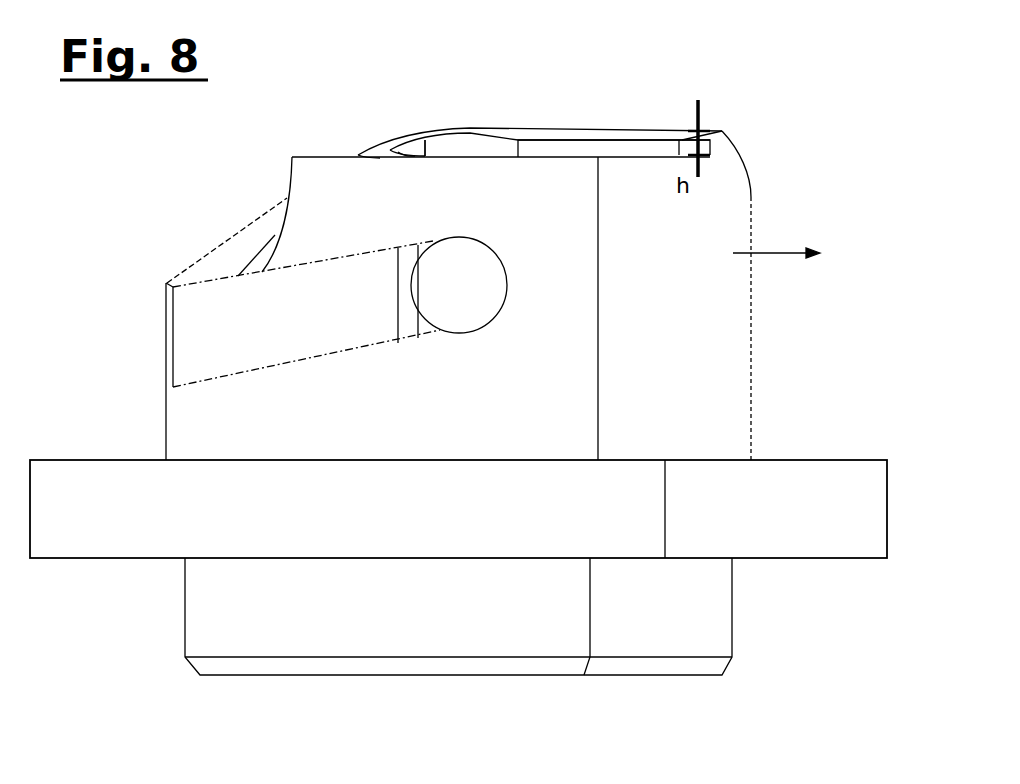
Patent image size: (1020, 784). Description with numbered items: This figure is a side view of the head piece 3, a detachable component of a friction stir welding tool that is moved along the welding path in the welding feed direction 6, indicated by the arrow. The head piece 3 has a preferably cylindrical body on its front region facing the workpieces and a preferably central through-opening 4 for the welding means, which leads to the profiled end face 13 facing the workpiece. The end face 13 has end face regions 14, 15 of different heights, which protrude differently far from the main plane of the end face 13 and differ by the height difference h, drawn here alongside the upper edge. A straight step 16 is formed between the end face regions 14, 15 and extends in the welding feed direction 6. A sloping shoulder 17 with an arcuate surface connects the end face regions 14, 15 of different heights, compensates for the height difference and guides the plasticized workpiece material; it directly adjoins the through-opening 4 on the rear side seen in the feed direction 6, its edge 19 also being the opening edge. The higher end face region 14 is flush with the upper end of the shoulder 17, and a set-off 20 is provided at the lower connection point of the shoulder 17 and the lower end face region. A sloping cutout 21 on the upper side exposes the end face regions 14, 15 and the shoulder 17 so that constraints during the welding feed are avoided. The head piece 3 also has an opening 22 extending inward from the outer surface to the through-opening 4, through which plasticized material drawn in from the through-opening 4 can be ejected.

The head piece 3 is at (562, 353).
The through-opening 4 is at (495, 145).
The welding feed direction 6 is at (773, 253).
The end face 13 is at (727, 117).
The end face region 14 is at (628, 133).
The end face region 15 is at (592, 157).
The straight step 16 is at (568, 150).
The sloping shoulder 17 is at (423, 137).
The edge 19 is at (453, 137).
The set-off 20 is at (405, 152).
The sloping cutout 21 is at (742, 157).
The opening 22 is at (460, 298).